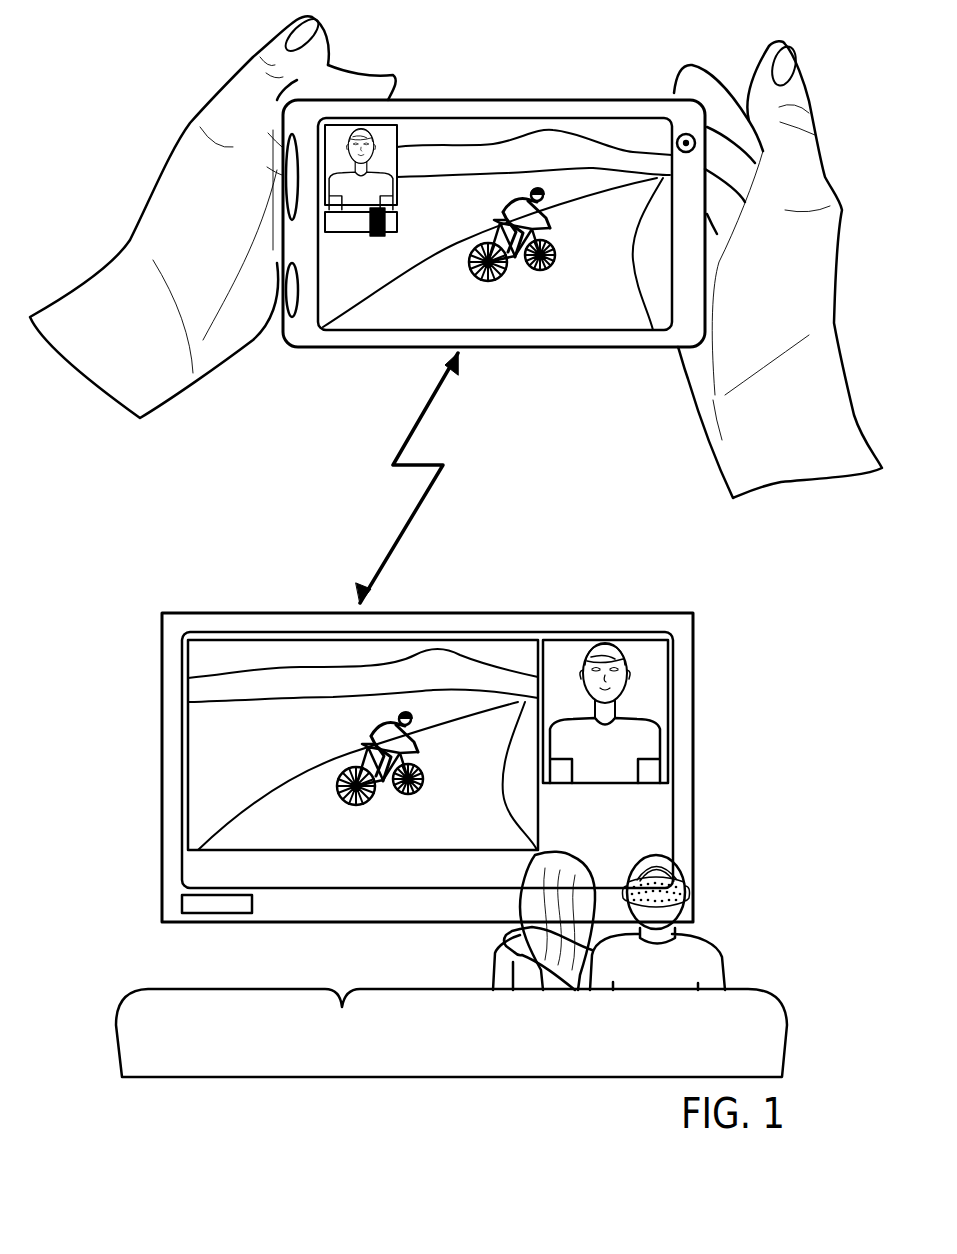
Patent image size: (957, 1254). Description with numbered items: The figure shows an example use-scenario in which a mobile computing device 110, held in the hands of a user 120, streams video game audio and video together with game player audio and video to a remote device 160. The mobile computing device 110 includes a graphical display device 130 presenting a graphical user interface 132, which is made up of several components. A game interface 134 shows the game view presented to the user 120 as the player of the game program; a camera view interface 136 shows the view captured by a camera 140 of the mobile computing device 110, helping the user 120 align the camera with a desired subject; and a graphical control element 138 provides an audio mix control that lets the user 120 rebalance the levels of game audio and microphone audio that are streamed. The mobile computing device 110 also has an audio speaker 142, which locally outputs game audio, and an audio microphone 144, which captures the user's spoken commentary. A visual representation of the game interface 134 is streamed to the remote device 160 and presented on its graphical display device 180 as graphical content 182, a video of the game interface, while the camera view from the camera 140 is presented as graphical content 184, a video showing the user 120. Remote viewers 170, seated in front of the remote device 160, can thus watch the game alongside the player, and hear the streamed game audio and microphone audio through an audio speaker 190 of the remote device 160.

The mobile computing device 110 is at (543, 103).
The user 120 is at (212, 348).
The graphical display device 130 is at (513, 302).
The graphical user interface 132 is at (615, 321).
The game interface 134 is at (500, 143).
The camera view interface 136 is at (383, 140).
The graphical control element 138 is at (380, 243).
The camera 140 is at (682, 138).
The audio speaker 142 is at (297, 137).
The audio microphone 144 is at (295, 310).
The remote device 160 is at (637, 622).
The remote viewers 170 is at (707, 924).
The graphical display device 180 is at (390, 866).
The graphical content 182 is at (497, 662).
The graphical content 184 is at (568, 663).
The audio speaker 190 is at (237, 905).